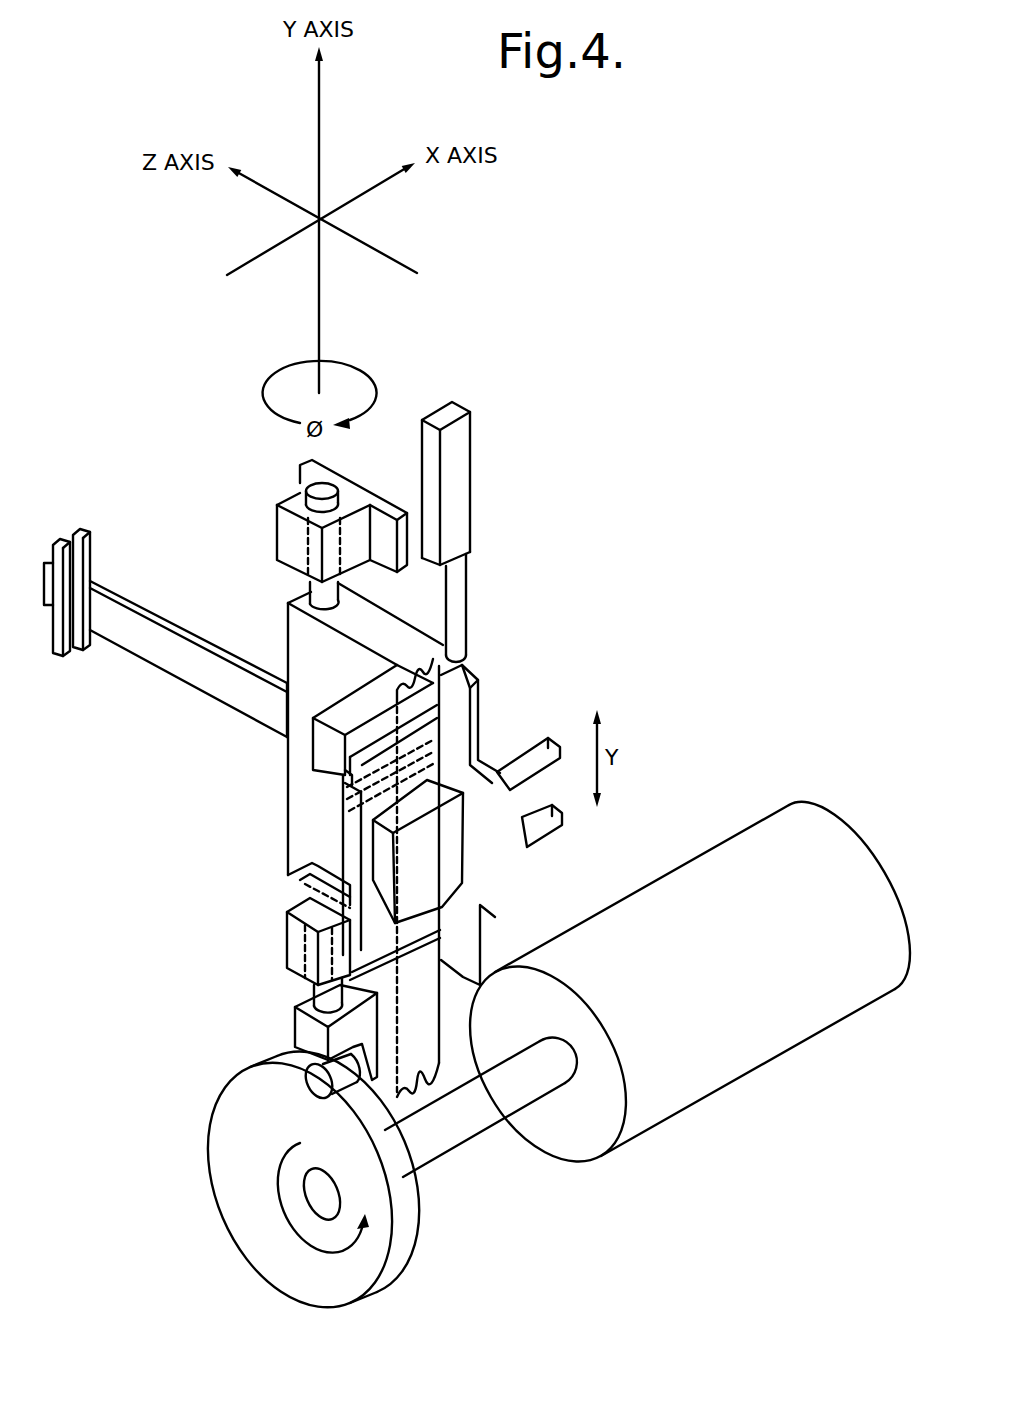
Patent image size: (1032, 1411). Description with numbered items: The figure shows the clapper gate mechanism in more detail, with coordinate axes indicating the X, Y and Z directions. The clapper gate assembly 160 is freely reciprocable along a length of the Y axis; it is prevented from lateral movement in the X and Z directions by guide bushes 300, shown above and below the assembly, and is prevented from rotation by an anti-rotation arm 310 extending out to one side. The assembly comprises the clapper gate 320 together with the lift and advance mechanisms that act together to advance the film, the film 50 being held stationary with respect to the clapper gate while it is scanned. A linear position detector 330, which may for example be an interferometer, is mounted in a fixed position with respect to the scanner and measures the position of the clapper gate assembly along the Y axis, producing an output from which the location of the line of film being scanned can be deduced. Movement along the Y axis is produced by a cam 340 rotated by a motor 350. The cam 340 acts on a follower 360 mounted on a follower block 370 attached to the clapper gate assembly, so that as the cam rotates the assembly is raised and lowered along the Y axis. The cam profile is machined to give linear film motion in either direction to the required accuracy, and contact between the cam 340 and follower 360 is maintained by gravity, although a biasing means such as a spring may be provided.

The clapper gate assembly 160 is at (213, 540).
The guide bushes 300 is at (293, 563).
The anti-rotation arm 310 is at (170, 658).
The clapper gate 320 is at (322, 753).
The linear position detector 330 is at (458, 483).
The sheet 50 is at (433, 722).
The follower block 370 is at (305, 1033).
The follower 360 is at (222, 1100).
The cam 340 is at (258, 1228).
The motor 350 is at (740, 1043).